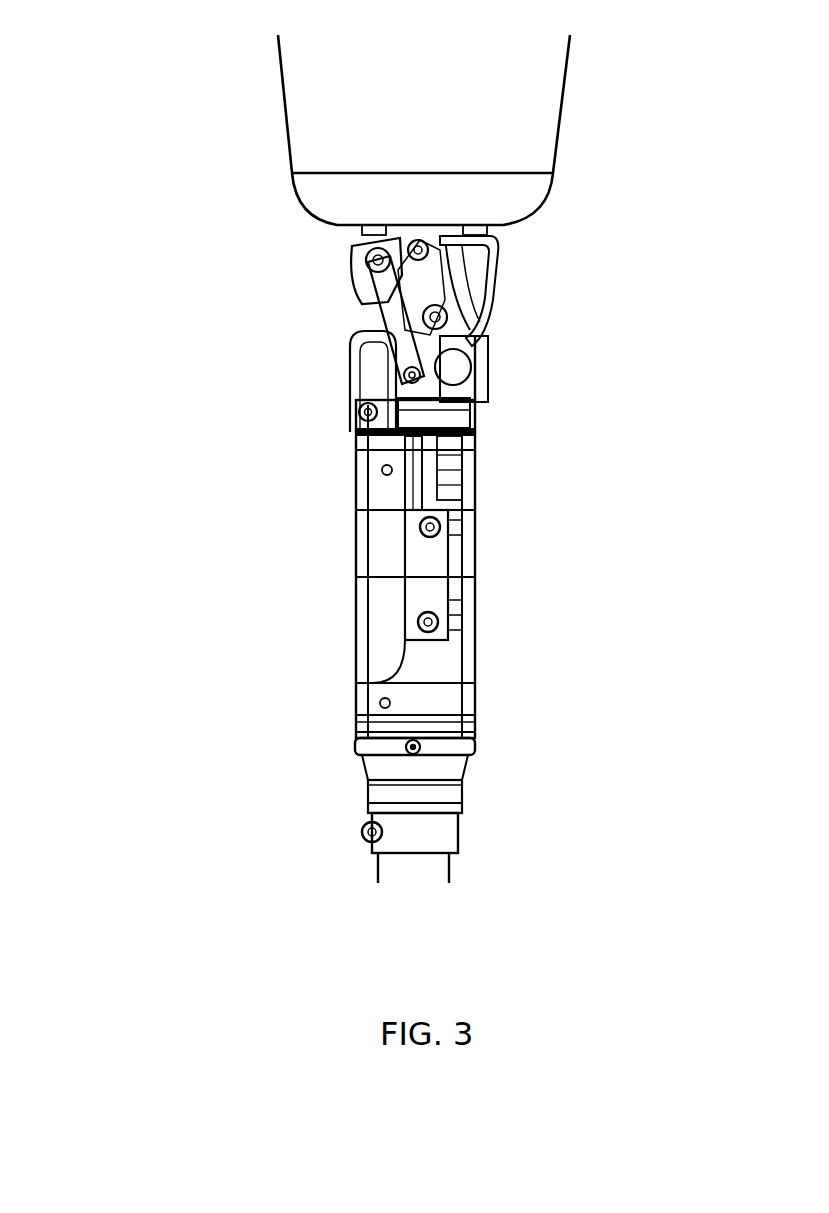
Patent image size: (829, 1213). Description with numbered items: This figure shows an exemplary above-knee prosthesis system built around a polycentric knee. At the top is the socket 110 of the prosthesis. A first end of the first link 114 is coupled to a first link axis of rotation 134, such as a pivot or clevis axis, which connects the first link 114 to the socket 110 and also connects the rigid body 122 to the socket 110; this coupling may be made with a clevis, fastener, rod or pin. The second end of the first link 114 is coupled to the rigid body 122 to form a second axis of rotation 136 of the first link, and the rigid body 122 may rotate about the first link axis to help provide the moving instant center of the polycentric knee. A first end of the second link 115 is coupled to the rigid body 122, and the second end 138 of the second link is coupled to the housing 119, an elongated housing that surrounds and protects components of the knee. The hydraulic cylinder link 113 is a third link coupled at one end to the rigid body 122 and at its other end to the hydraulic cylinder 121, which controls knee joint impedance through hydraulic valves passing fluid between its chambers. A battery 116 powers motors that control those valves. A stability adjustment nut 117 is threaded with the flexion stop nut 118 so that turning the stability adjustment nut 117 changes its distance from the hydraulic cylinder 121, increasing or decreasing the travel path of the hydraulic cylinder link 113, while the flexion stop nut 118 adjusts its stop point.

The socket 110 is at (491, 135).
The hydraulic cylinder link 113 is at (238, 247).
The first link 114 is at (573, 260).
The second link 115 is at (235, 362).
The battery 116 is at (571, 339).
The stability adjustment nut 117 is at (552, 377).
The flexion stop nut 118 is at (531, 609).
The housing 119 is at (556, 469).
The hydraulic cylinder 121 is at (556, 560).
The rigid body 122 is at (552, 280).
The first link axis of rotation 134 is at (296, 179).
The second axis of rotation 136 is at (259, 312).
The second end of the second link 138 is at (224, 391).